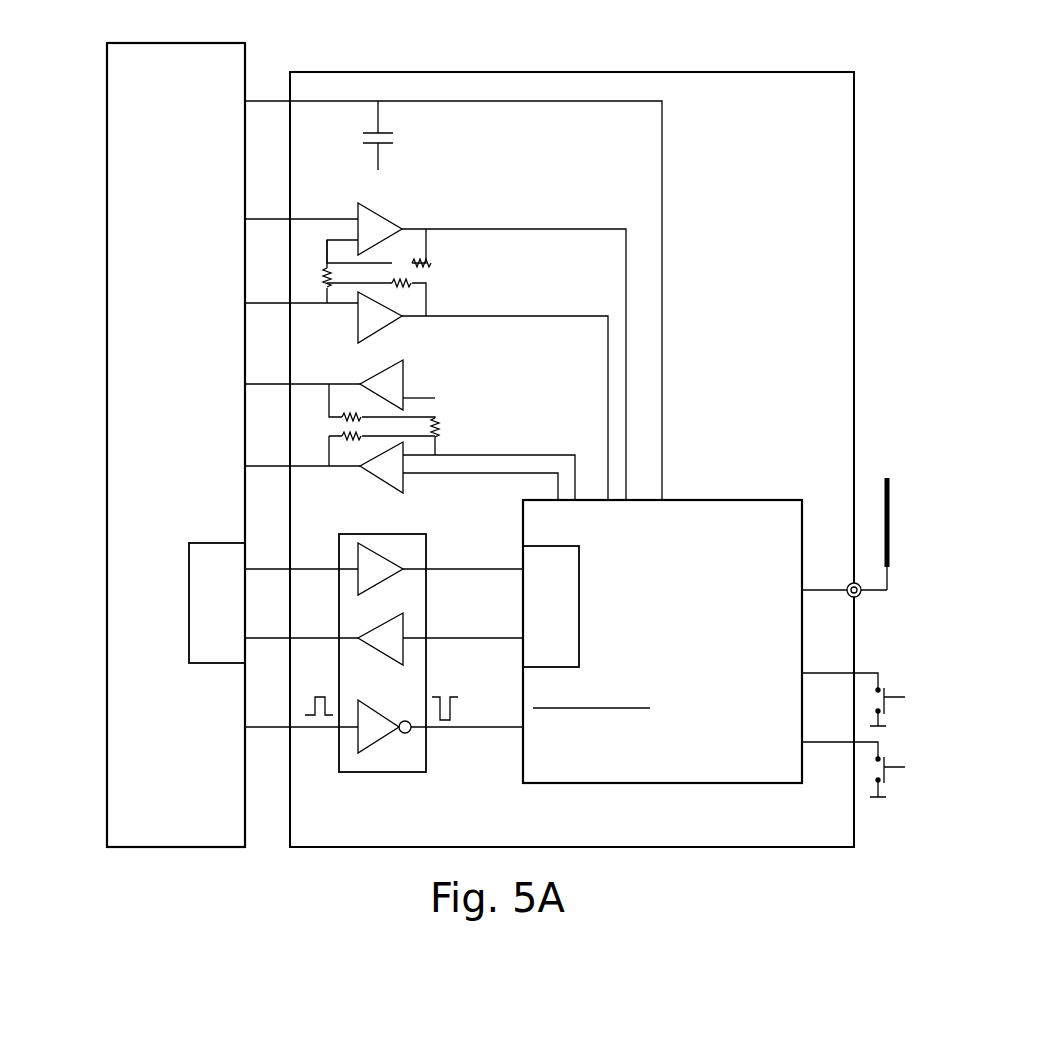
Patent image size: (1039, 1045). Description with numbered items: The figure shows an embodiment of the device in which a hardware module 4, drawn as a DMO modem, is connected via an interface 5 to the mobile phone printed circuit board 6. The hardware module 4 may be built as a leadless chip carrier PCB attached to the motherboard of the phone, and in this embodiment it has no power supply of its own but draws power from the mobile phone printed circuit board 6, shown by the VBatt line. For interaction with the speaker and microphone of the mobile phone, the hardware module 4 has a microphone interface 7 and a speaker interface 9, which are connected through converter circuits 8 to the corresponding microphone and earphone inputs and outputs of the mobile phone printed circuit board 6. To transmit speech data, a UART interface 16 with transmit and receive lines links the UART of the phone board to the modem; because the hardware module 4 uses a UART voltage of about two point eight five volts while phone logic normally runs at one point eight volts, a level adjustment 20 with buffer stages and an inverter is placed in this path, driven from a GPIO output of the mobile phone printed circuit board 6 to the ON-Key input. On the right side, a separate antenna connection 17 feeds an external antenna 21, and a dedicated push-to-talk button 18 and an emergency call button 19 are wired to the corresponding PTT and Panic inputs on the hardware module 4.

The hardware module 4 is at (793, 500).
The interface 5 is at (854, 90).
The mobile phone printed circuit board 6 is at (247, 60).
The microphone interface 7 is at (604, 498).
The converter circuit 8 is at (432, 328).
The speaker interface 9 is at (550, 494).
The UART interface 16 is at (189, 550).
The antenna connection 17 is at (862, 598).
The push-to-talk button 18 is at (905, 697).
The emergency call button 19 is at (905, 767).
The level adjustment 20 is at (340, 700).
The external antenna 21 is at (893, 490).